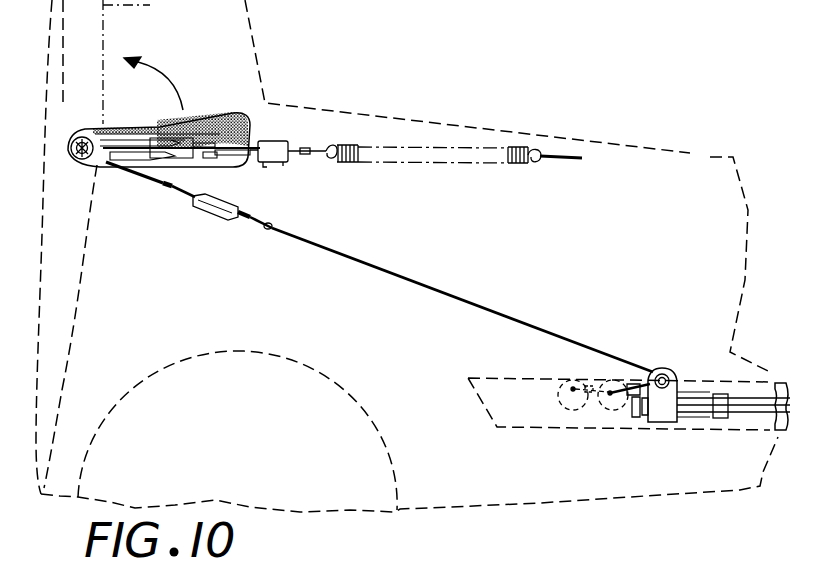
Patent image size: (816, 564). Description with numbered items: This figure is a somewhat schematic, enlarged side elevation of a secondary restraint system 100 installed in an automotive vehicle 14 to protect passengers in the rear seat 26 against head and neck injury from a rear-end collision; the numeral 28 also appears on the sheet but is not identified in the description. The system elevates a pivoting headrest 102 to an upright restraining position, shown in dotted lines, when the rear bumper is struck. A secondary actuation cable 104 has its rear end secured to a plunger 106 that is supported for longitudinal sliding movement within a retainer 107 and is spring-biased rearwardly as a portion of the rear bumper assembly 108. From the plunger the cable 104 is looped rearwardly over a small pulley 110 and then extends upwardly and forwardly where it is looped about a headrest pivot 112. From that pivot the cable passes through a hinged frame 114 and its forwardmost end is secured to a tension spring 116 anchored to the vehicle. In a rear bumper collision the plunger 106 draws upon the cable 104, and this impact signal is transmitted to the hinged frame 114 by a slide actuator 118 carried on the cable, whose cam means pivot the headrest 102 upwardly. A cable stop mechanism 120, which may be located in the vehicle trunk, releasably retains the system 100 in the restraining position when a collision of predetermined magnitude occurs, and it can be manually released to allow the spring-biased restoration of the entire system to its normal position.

The automotive vehicle 14 is at (697, 153).
The rear seat 26 is at (64, 347).
The vehicle floor 28 is at (409, 500).
The secondary restraint system 100 is at (336, 102).
The pivoting headrest 102 is at (226, 120).
The secondary actuation cable 104 is at (505, 308).
The plunger 106 is at (620, 413).
The retainer 107 is at (700, 410).
The rear bumper assembly 108 is at (783, 383).
The pulley 110 is at (688, 352).
The headrest pivot 112 is at (84, 163).
The hinged frame 114 is at (146, 172).
The tension spring 116 is at (516, 166).
The slide actuator 118 is at (160, 126).
The cable stop mechanism 120 is at (290, 169).